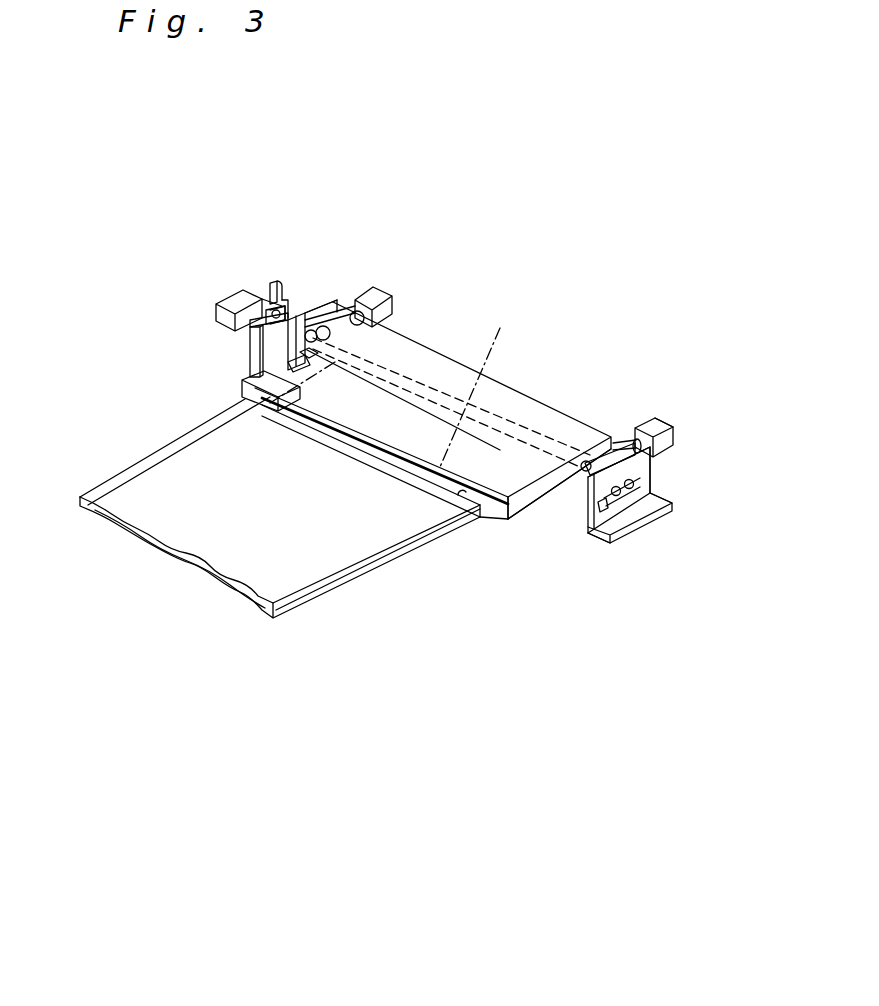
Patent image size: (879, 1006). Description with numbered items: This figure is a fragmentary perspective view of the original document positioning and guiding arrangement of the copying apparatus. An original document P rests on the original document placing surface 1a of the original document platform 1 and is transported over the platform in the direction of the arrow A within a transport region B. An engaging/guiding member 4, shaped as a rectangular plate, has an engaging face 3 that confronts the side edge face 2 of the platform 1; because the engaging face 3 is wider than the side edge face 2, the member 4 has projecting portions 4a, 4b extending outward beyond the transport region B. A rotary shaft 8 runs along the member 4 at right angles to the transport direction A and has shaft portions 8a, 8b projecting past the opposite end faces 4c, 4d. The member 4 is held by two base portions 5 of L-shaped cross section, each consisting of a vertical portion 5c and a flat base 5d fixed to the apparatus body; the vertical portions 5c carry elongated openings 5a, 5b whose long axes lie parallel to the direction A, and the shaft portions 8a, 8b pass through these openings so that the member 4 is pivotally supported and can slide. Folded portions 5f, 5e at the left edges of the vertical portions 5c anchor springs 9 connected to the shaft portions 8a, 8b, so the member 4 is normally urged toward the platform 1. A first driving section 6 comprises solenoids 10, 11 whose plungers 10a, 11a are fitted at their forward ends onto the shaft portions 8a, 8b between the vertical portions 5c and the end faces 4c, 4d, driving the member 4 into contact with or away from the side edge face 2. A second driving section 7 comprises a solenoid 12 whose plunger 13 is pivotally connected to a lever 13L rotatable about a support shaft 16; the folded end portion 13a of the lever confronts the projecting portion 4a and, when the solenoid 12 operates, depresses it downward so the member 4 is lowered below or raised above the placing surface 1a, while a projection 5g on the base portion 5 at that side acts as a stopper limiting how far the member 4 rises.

The original document platform 1 is at (310, 600).
The original document placing surface 1a is at (120, 484).
The original document P is at (198, 530).
The transport direction A is at (355, 472).
The side edge face 2 is at (462, 497).
The engaging face 3 is at (502, 517).
The engaging/guiding member 4 is at (542, 393).
The projecting portion 4a is at (273, 380).
The projecting portion 4b is at (525, 503).
The end face 4c is at (305, 358).
The end face 4d is at (560, 470).
The base portion 5 is at (322, 297).
The elongated opening 5a is at (332, 303).
The elongated opening 5b is at (643, 462).
The vertical portion 5c is at (642, 488).
The flat base 5d is at (620, 520).
The folded portion 5e is at (596, 542).
The folded portion 5f is at (249, 352).
The projection 5g is at (302, 356).
The first driving section 6 is at (396, 289).
The second driving section 7 is at (231, 290).
The rotary shaft 8 is at (492, 398).
The shaft portion 8a is at (304, 320).
The shaft portion 8b is at (592, 462).
The spring 9 is at (248, 334).
The solenoid 10 is at (368, 293).
The plunger 10a is at (335, 342).
The solenoid 11 is at (658, 419).
The plunger 11a is at (617, 445).
The solenoid 12 is at (218, 310).
The plunger 13 is at (271, 292).
The lever 13L is at (278, 302).
The folded end portion 13a is at (243, 377).
The support shaft 16 is at (283, 308).
The transport region B is at (438, 378).